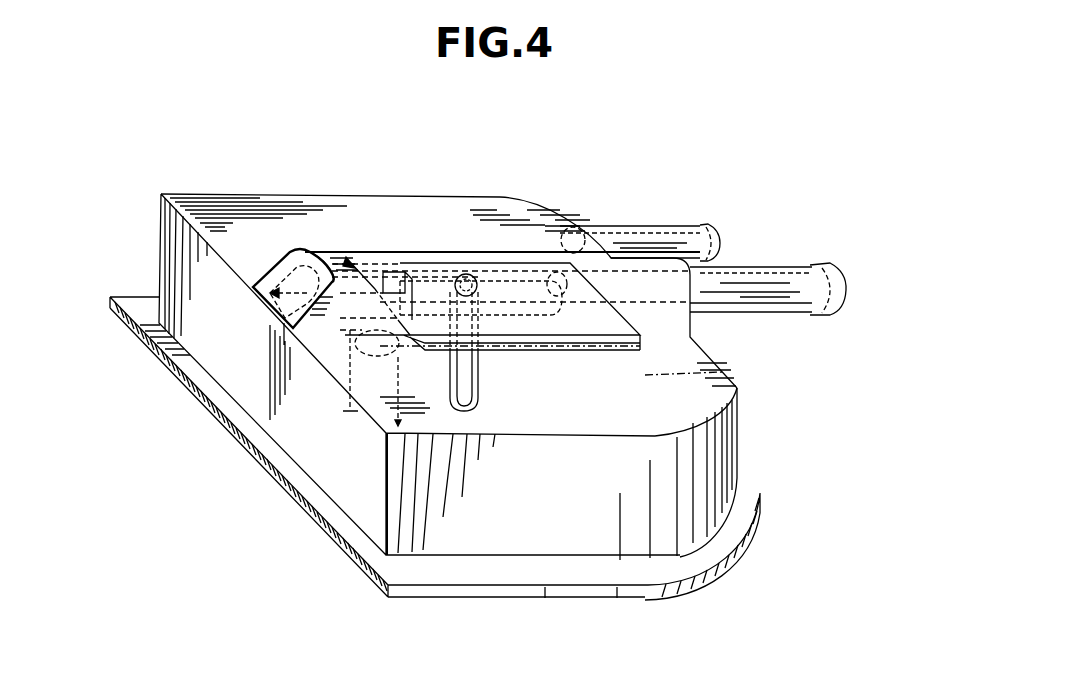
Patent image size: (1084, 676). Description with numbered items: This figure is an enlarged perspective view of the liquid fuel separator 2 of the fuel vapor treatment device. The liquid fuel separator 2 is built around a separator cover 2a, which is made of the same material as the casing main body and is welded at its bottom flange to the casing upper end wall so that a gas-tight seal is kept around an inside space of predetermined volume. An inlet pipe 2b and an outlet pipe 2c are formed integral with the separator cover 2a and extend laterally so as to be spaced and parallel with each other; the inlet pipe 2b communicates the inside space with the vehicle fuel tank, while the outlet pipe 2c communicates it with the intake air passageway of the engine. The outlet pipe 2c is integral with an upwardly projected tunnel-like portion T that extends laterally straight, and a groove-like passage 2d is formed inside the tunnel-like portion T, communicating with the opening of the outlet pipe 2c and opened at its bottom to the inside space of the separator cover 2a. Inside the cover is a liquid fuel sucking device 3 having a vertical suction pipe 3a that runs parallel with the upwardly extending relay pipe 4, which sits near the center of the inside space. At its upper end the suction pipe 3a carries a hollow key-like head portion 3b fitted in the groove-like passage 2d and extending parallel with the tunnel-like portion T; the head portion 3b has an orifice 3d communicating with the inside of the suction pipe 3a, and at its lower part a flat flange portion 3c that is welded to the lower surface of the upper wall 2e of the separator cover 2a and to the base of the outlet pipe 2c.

The liquid fuel separator 2 is at (248, 369).
The separator cover 2a is at (726, 458).
The inlet pipe 2b is at (655, 243).
The outlet pipe 2c is at (757, 283).
The groove-like passage 2d is at (338, 308).
The upper wall 2e is at (372, 227).
The tunnel-like portion T is at (517, 250).
The liquid fuel sucking device 3 is at (541, 356).
The suction pipe 3a is at (473, 360).
The key-like head portion 3b is at (433, 281).
The flange portion 3c is at (632, 340).
The orifice 3d is at (466, 281).
The relay pipe 4 is at (372, 384).